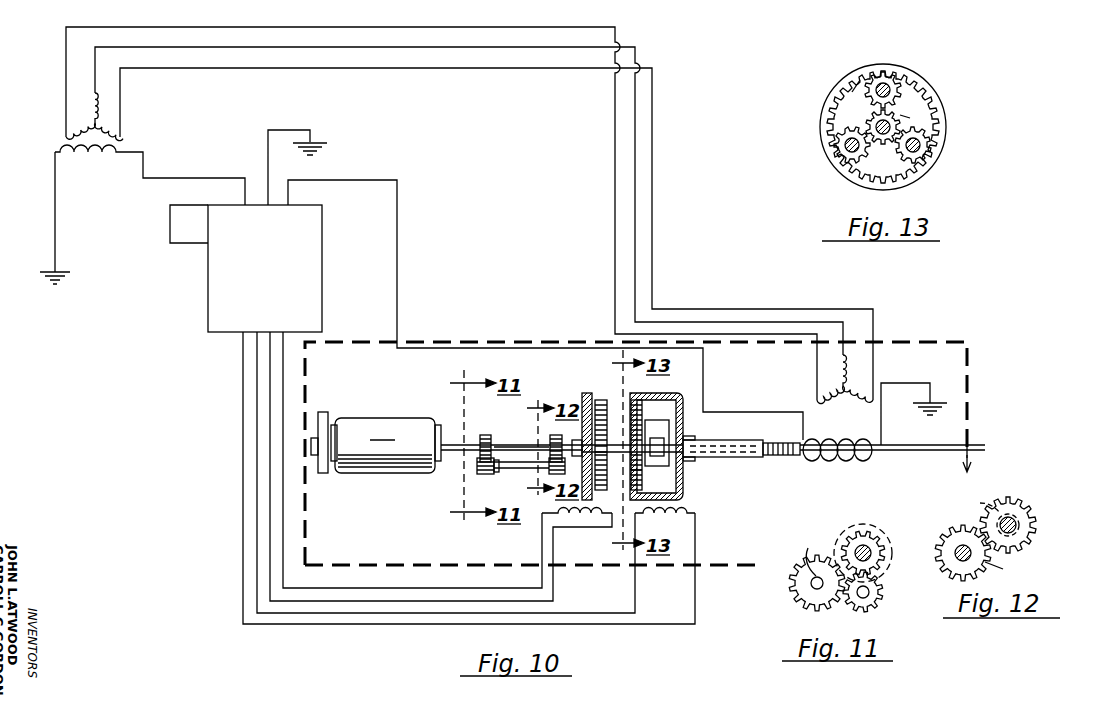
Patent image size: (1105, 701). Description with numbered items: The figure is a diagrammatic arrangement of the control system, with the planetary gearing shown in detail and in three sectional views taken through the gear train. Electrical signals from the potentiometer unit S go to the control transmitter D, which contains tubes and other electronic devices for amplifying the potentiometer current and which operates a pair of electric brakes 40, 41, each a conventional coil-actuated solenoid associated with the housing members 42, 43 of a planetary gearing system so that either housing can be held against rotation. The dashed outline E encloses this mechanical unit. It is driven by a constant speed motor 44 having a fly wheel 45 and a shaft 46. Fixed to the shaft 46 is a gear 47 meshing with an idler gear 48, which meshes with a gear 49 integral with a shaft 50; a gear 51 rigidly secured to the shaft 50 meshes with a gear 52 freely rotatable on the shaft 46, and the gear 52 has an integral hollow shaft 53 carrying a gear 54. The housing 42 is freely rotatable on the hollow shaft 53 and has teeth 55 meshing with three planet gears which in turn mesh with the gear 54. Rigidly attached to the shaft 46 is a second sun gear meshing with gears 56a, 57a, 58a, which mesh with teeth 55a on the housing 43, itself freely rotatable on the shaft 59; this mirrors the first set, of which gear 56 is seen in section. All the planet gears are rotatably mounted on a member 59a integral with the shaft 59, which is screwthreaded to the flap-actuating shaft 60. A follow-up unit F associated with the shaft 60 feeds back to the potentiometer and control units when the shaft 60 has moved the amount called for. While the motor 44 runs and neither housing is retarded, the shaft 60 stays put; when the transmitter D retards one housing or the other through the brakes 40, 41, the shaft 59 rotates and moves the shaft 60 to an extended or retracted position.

In FIG. 10, the potentiometer unit S is at (125, 125).
In FIG. 10, the control transmitter D is at (208, 280).
In FIG. 10, the actuator assembly E is at (366, 562).
In FIG. 10, the follow-up unit F is at (866, 396).
In FIG. 10, the electric brake 40 is at (562, 510).
In FIG. 10, the electric brake 41 is at (688, 512).
In FIG. 10, the housing member 42 is at (590, 393).
In FIG. 10, the housing member 43 is at (672, 393).
In FIG. 13, the housing member 43 is at (940, 96).
In FIG. 10, the constant speed motor 44 is at (368, 472).
In FIG. 10, the fly wheel 45 is at (326, 472).
In FIG. 10, the shaft 46 is at (463, 456).
In FIG. 11, the shaft 46 is at (871, 556).
In FIG. 12, the shaft 46 is at (1013, 523).
In FIG. 13, the shaft 46 is at (876, 122).
In FIG. 10, the gear 47 is at (491, 427).
In FIG. 11, the gear 47 is at (881, 536).
In FIG. 10, the idler gear 48 is at (485, 476).
In FIG. 11, the idler gear 48 is at (878, 594).
In FIG. 10, the gear 49 is at (474, 448).
In FIG. 11, the gear 49 is at (796, 594).
In FIG. 10, the shaft 50 is at (498, 474).
In FIG. 11, the shaft 50 is at (818, 557).
In FIG. 12, the shaft 50 is at (955, 554).
In FIG. 10, the gear 51 is at (545, 470).
In FIG. 12, the gear 51 is at (1003, 569).
In FIG. 10, the gear 52 is at (551, 434).
In FIG. 11, the gear 52 is at (860, 531).
In FIG. 12, the gear 52 is at (1030, 530).
In FIG. 10, the hollow shaft 53 is at (580, 434).
In FIG. 12, the hollow shaft 53 is at (983, 507).
In FIG. 10, the gear 54 is at (626, 440).
In FIG. 13, the gear 54 is at (915, 118).
In FIG. 10, the teeth 55 is at (607, 478).
In FIG. 10, the teeth 55a is at (640, 486).
In FIG. 13, the teeth 55a is at (860, 80).
In FIG. 10, the gear 56 is at (607, 408).
In FIG. 10, the gear 56a is at (642, 408).
In FIG. 13, the gear 56a is at (896, 80).
In FIG. 13, the gear 57a is at (925, 160).
In FIG. 13, the gear 58a is at (841, 153).
In FIG. 10, the shaft 59 is at (728, 448).
In FIG. 10, the member 59a is at (688, 434).
In FIG. 10, the flap-actuating shaft 60 is at (976, 447).